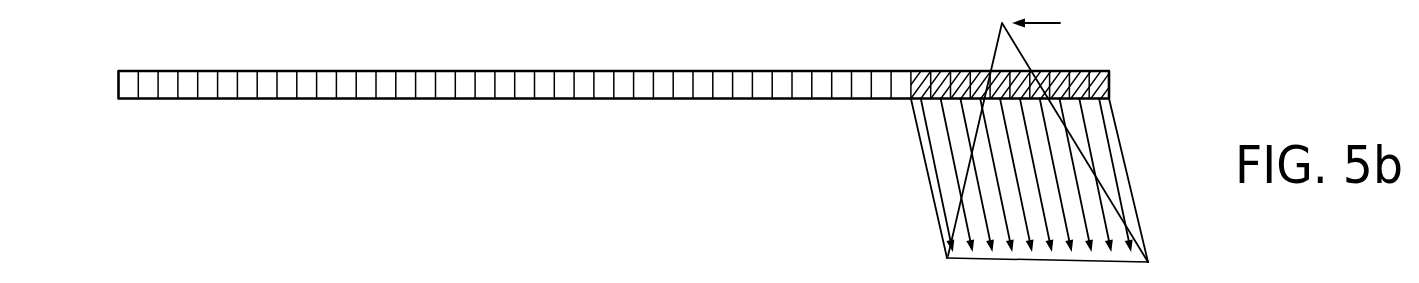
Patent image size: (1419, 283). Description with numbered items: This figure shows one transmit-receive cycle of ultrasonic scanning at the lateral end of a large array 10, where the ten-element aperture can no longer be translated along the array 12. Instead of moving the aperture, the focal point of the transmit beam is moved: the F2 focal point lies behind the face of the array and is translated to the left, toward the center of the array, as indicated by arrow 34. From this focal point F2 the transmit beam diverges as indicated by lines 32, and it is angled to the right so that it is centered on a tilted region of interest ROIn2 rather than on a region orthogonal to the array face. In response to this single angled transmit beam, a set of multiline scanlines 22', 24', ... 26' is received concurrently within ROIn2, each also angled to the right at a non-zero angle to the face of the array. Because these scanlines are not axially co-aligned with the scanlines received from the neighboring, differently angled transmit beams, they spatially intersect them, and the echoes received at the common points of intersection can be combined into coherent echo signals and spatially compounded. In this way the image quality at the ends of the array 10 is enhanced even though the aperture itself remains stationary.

The array 10 is at (104, 80).
The array 12 is at (503, 88).
The focal point F2 is at (1000, 23).
The arrow 34 is at (1060, 23).
The received scanline 22' is at (900, 176).
The received scanline 24' is at (913, 176).
The received scanline 26' is at (1147, 176).
The region of interest ROIn2 is at (934, 208).
The lines 32 is at (947, 259).